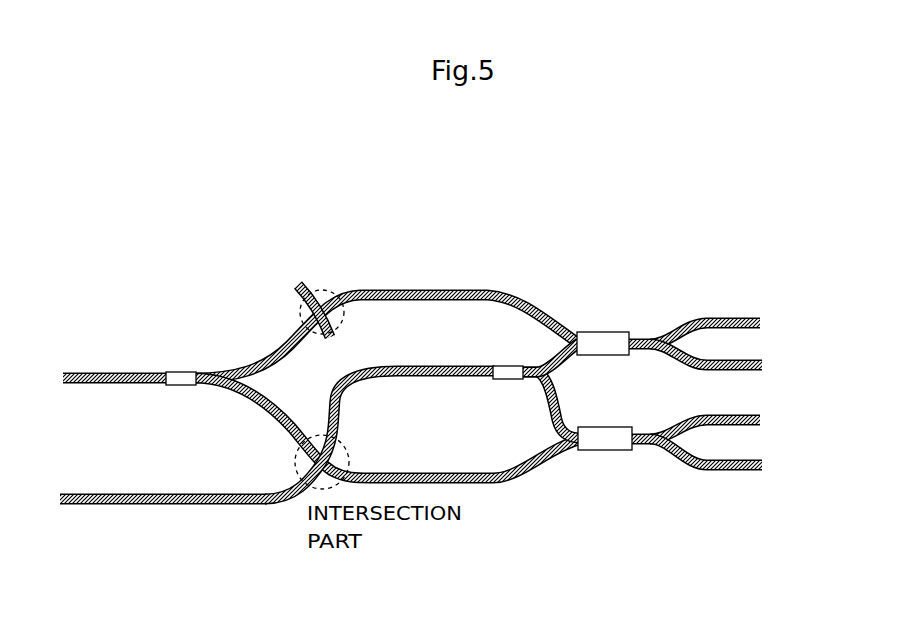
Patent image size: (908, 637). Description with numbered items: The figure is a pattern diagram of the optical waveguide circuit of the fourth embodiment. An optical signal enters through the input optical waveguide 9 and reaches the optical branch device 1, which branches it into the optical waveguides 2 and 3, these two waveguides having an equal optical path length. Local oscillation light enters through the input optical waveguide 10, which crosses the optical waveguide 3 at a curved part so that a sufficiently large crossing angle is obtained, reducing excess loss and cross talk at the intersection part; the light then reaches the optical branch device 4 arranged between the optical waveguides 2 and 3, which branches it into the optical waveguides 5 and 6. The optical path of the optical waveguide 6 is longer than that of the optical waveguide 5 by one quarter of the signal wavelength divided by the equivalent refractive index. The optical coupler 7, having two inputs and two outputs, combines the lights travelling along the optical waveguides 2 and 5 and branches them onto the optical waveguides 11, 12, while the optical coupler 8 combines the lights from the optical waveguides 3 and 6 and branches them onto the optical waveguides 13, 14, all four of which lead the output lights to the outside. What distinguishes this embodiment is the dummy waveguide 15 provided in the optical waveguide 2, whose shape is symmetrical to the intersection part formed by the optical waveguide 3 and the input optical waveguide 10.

The optical branch device 1 is at (182, 372).
The optical waveguide 2 is at (470, 290).
The optical waveguide 3 is at (473, 487).
The optical branch device 4 is at (500, 380).
The optical waveguide 5 is at (547, 353).
The optical waveguide 6 is at (560, 407).
The optical coupler 7 is at (607, 332).
The optical coupler 8 is at (612, 450).
The input optical waveguide 9 is at (95, 370).
The input optical waveguide 10 is at (135, 507).
The optical waveguide 11 is at (763, 318).
The optical waveguide 12 is at (763, 363).
The optical waveguide 13 is at (763, 417).
The optical waveguide 14 is at (763, 462).
The dummy waveguide 15 is at (305, 280).